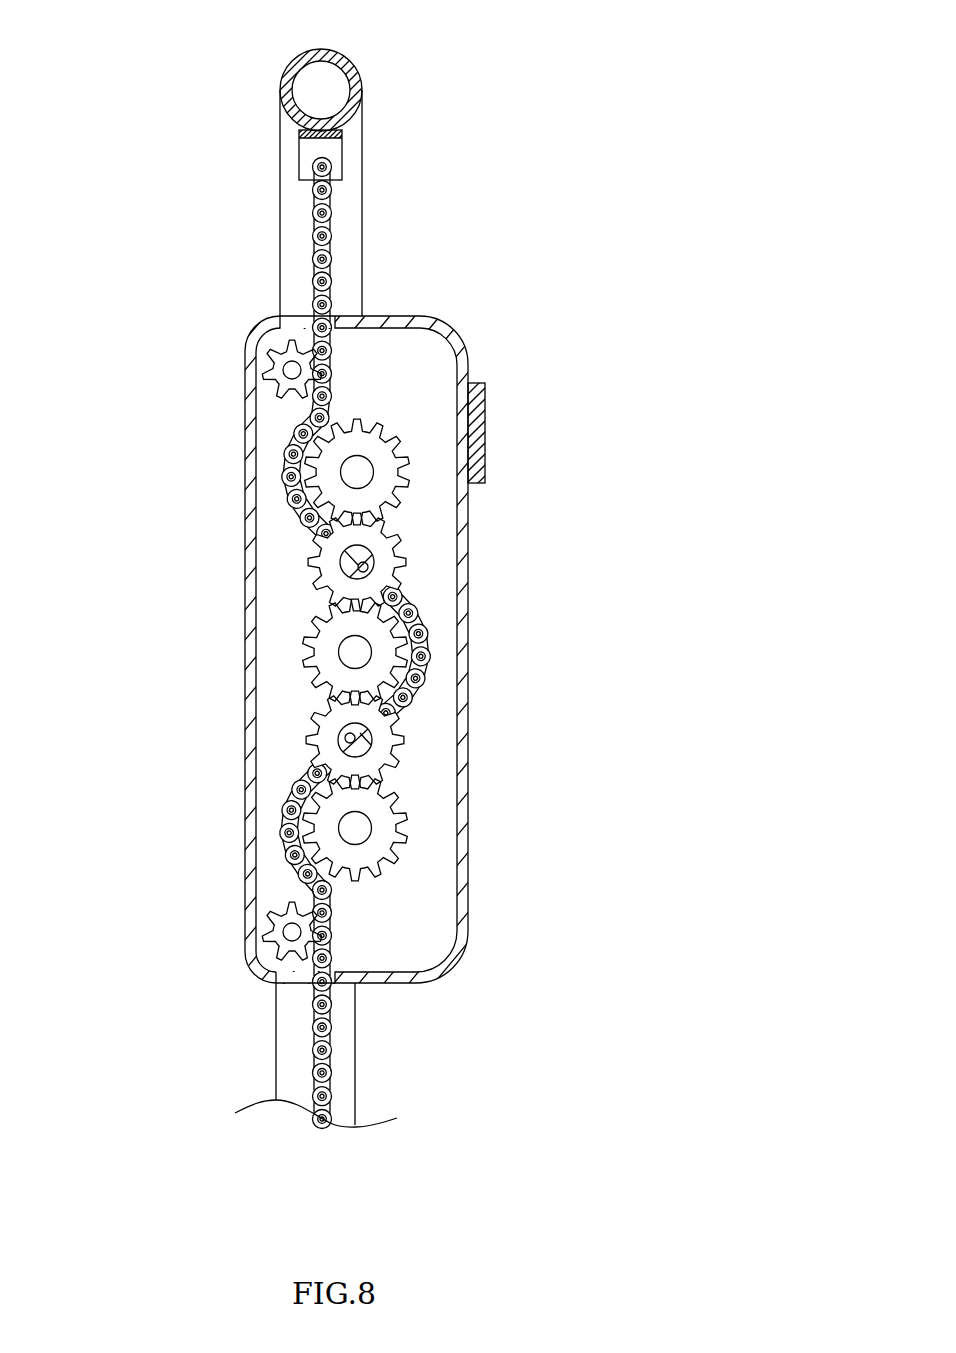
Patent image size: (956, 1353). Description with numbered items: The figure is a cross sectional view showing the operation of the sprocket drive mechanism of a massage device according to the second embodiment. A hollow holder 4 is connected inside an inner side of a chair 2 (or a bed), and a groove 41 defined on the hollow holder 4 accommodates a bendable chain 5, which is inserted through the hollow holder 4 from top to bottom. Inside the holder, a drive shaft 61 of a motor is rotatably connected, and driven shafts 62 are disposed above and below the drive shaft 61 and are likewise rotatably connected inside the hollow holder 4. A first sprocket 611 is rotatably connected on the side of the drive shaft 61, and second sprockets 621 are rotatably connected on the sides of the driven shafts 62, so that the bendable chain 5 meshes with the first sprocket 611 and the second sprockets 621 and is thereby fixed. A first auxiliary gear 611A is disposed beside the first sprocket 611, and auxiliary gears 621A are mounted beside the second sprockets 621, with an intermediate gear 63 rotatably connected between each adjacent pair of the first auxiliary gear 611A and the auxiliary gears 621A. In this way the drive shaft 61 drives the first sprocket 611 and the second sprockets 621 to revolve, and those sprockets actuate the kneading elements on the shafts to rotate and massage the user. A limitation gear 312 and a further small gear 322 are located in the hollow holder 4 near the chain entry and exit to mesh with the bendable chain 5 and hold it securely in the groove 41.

The chair 2 is at (360, 92).
The hollow holder 4 is at (478, 652).
The groove 41 is at (272, 327).
The limitation gear 312 is at (273, 353).
The lower guide sprocket 322 is at (282, 932).
The bendable chain 5 is at (287, 808).
The drive shaft 61 is at (356, 626).
The first sprocket 611 is at (240, 626).
The first auxiliary gear 611A is at (307, 625).
The driven shaft 62 is at (487, 681).
The second sprocket 621 is at (400, 883).
The auxiliary gear 621A is at (400, 448).
The intermediate gear 63 is at (377, 562).